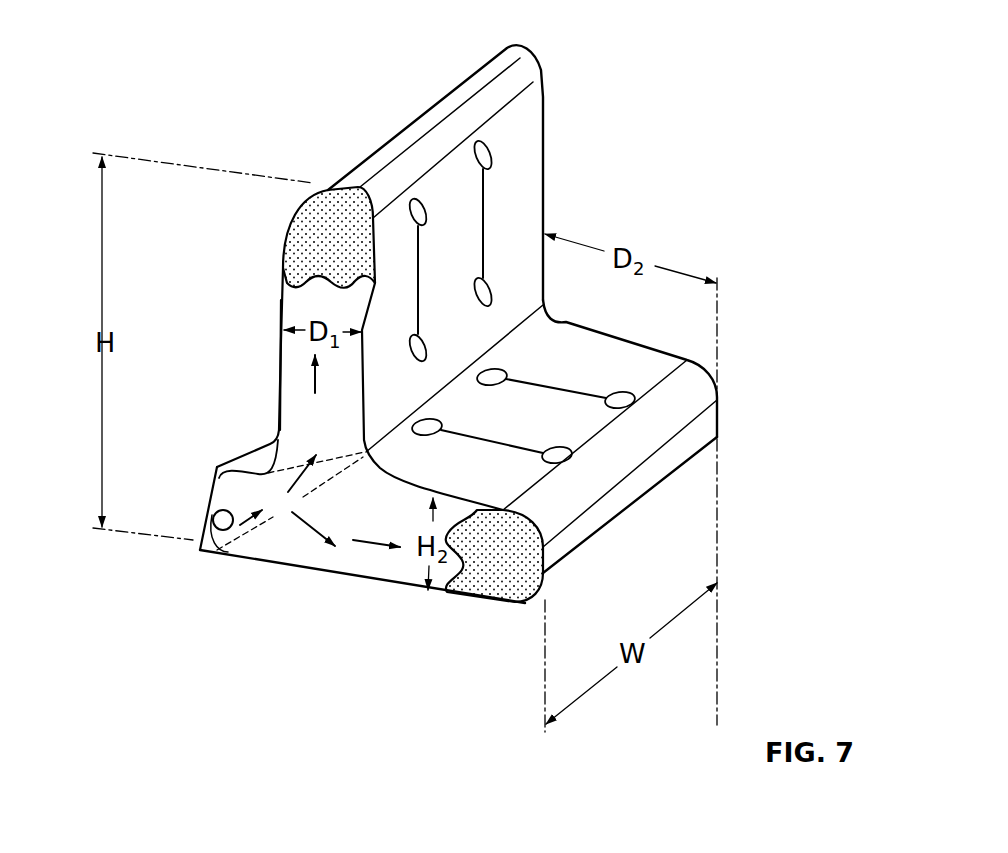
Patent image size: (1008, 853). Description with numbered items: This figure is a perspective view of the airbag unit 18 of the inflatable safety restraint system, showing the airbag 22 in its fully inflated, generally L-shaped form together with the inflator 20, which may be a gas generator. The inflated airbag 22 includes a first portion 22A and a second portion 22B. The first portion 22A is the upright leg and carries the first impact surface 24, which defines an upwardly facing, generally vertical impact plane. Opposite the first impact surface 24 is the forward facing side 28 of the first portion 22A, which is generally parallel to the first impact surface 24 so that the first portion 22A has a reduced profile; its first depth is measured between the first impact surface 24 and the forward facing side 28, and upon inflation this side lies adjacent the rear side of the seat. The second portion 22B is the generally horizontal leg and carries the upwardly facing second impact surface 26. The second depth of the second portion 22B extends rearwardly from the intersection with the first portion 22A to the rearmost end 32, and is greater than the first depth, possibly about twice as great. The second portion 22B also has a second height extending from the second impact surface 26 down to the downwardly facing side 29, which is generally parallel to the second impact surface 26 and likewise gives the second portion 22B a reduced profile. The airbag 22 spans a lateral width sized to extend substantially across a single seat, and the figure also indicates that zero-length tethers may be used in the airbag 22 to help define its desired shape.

The airbag unit 18 is at (616, 43).
The inflator 20 is at (232, 530).
The airbag 22 is at (633, 517).
The first portion 22A is at (543, 115).
The second portion 22B is at (617, 333).
The first impact surface 24 is at (453, 220).
The second impact surface 26 is at (566, 425).
The forward facing side 28 is at (280, 387).
The downwardly facing side 29 is at (362, 580).
The rearmost end 32 is at (578, 540).